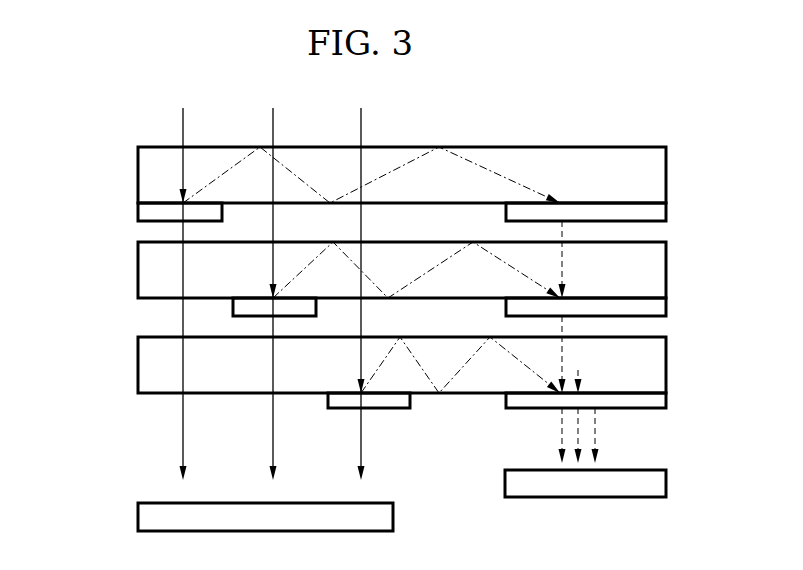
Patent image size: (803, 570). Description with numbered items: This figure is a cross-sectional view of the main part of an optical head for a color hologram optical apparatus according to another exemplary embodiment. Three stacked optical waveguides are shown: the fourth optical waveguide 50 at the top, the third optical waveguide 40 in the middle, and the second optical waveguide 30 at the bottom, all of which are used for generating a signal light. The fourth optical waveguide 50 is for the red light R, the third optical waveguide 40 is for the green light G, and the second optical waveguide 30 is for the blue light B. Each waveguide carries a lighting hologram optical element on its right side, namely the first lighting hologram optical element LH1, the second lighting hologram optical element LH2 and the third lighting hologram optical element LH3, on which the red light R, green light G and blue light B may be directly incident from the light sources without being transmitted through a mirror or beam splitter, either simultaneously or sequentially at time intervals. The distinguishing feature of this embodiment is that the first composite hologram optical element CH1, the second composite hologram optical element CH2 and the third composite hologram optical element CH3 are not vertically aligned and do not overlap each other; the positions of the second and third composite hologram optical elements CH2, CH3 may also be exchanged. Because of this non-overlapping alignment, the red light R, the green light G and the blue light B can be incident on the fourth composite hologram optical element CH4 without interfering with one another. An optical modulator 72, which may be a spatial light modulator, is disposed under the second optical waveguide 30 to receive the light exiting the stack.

The fourth optical waveguide 50 is at (148, 177).
The third optical waveguide 40 is at (148, 272).
The second optical waveguide 30 is at (148, 367).
The first composite hologram optical element CH1 is at (143, 208).
The second composite hologram optical element CH2 is at (243, 311).
The third composite hologram optical element CH3 is at (338, 403).
The fourth composite hologram optical element CH4 is at (145, 518).
The first lighting hologram optical element LH1 is at (651, 212).
The second lighting hologram optical element LH2 is at (651, 307).
The third lighting hologram optical element LH3 is at (651, 401).
The optical modulator 72 is at (657, 481).
The red light R is at (182, 281).
The green light G is at (273, 281).
The blue light B is at (360, 281).